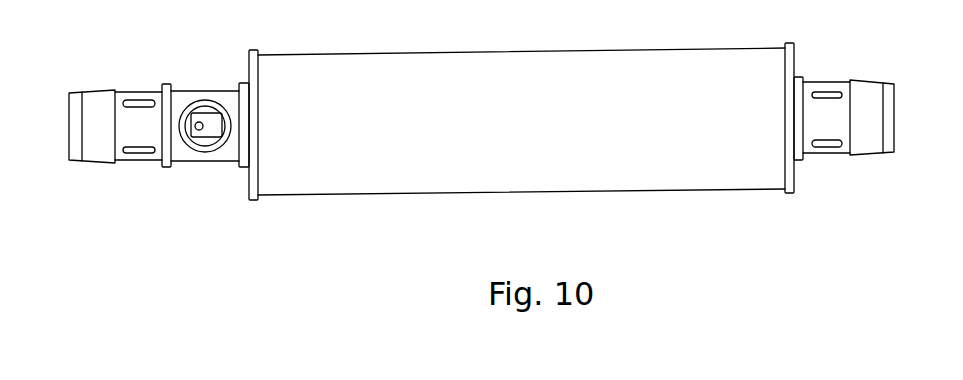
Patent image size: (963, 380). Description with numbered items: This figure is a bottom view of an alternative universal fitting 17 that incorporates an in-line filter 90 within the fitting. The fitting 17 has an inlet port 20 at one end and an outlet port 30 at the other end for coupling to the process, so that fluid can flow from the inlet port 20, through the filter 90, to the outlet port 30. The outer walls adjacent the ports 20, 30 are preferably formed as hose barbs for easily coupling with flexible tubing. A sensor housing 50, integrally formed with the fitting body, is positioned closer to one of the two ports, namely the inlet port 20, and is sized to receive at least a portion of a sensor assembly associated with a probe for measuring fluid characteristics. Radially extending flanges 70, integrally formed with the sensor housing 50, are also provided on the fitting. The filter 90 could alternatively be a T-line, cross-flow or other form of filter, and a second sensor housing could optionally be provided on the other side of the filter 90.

The fitting 17 is at (225, 252).
The inlet port 20 is at (68, 123).
The outlet port 30 is at (897, 133).
The sensor housing 50 is at (203, 150).
The radially extending flanges 70 is at (163, 84).
The in-line filter 90 is at (715, 177).